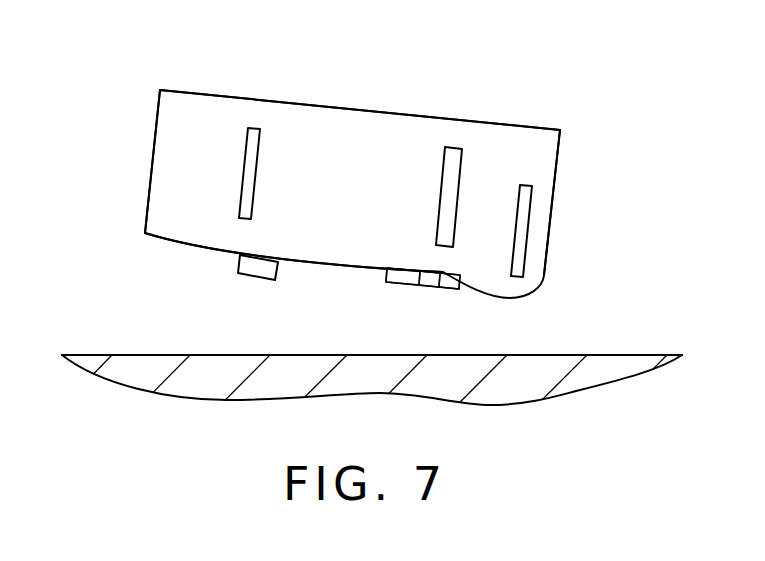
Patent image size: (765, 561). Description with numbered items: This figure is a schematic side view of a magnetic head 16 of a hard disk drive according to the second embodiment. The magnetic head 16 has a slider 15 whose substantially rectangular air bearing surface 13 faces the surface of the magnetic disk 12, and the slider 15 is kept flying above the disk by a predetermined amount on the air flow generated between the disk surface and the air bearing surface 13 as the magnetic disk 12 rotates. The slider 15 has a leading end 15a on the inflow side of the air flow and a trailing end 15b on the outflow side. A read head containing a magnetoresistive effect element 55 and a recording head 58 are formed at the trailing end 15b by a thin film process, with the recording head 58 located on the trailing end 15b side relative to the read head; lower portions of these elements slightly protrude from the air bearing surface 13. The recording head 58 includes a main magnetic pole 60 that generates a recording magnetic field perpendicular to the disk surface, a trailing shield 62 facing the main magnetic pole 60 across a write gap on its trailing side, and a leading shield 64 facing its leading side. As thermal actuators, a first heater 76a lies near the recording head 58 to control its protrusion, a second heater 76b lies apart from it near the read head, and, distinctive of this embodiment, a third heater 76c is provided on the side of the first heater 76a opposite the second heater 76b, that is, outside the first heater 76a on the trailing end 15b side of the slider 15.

The magnetic disk 12 is at (577, 383).
The air bearing surface 13 is at (165, 240).
The slider 15 is at (353, 117).
The leading end 15a is at (150, 173).
The trailing end 15b is at (553, 198).
The magnetic head 16 is at (135, 103).
The magnetoresistive effect element 55 is at (260, 268).
The recording head 58 is at (397, 250).
The main magnetic pole 60 is at (433, 278).
The trailing shield 62 is at (452, 282).
The leading shield 64 is at (395, 280).
The first heater 76a is at (442, 165).
The second heater 76b is at (245, 142).
The third heater 76c is at (520, 183).